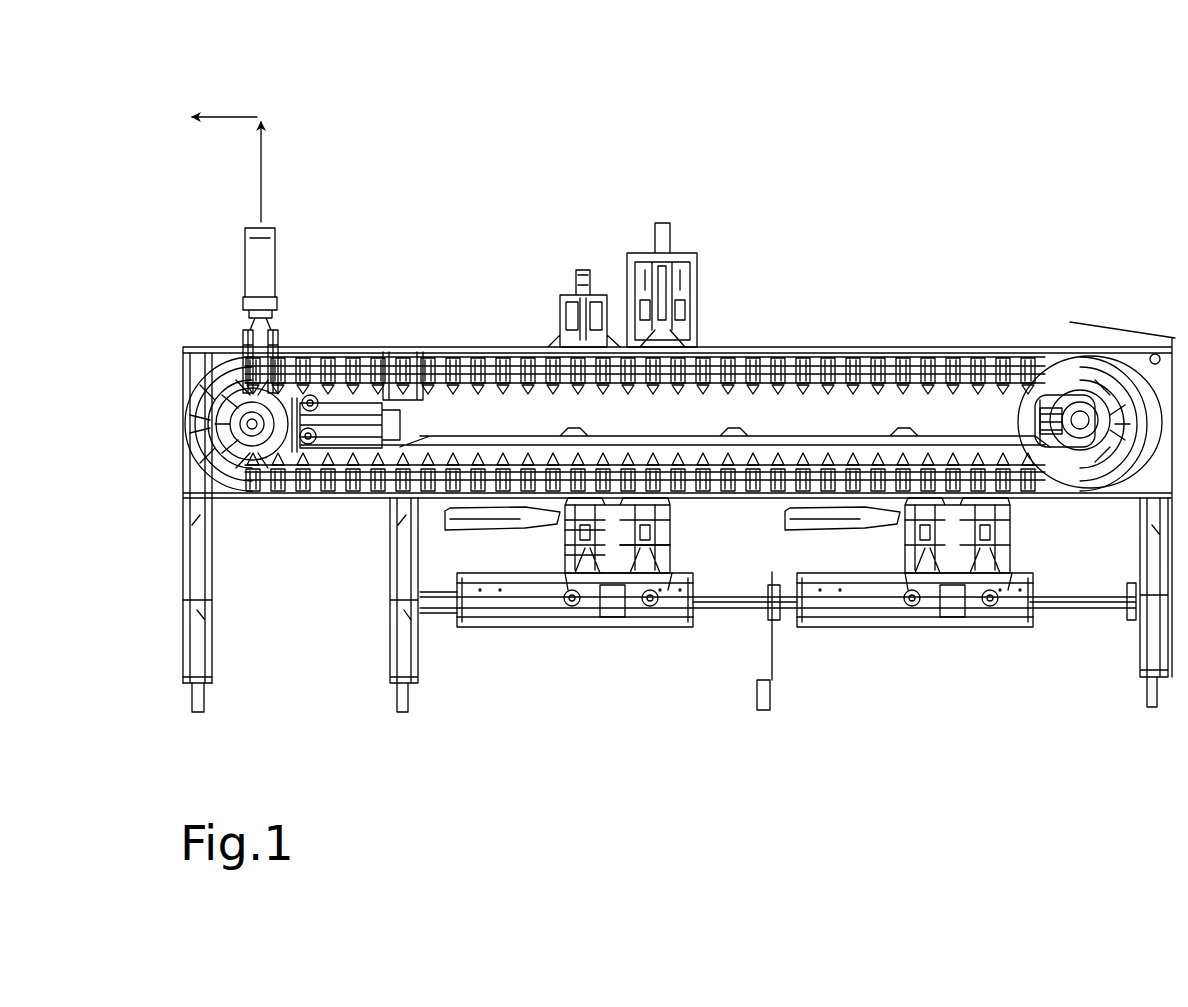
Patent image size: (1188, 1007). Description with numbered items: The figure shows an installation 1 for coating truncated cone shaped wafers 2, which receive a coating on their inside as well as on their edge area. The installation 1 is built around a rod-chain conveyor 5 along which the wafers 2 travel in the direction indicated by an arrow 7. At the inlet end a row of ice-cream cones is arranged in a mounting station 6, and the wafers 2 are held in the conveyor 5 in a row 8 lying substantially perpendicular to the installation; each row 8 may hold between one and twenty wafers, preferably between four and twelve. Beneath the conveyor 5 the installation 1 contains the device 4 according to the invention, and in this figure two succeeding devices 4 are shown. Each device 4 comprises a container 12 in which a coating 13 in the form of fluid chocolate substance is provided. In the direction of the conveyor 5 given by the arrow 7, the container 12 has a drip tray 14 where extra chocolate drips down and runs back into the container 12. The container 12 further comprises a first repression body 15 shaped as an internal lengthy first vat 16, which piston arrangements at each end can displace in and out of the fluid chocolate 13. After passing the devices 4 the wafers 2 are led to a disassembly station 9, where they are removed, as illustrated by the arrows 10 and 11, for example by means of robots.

The installation 1 is at (875, 208).
The wafers 2 is at (688, 342).
The device 4 is at (607, 652).
The conveyor 5 is at (955, 347).
The mounting station 6 is at (712, 262).
The arrow 7 is at (900, 315).
The row 8 is at (505, 355).
The disassembly station 9 is at (280, 263).
The arrow 10 is at (265, 168).
The arrow 11 is at (233, 117).
The container 12 is at (670, 532).
The coating 13 is at (562, 558).
The drip tray 14 is at (488, 516).
The first repression body 15 is at (562, 533).
The first vat 16 is at (650, 547).